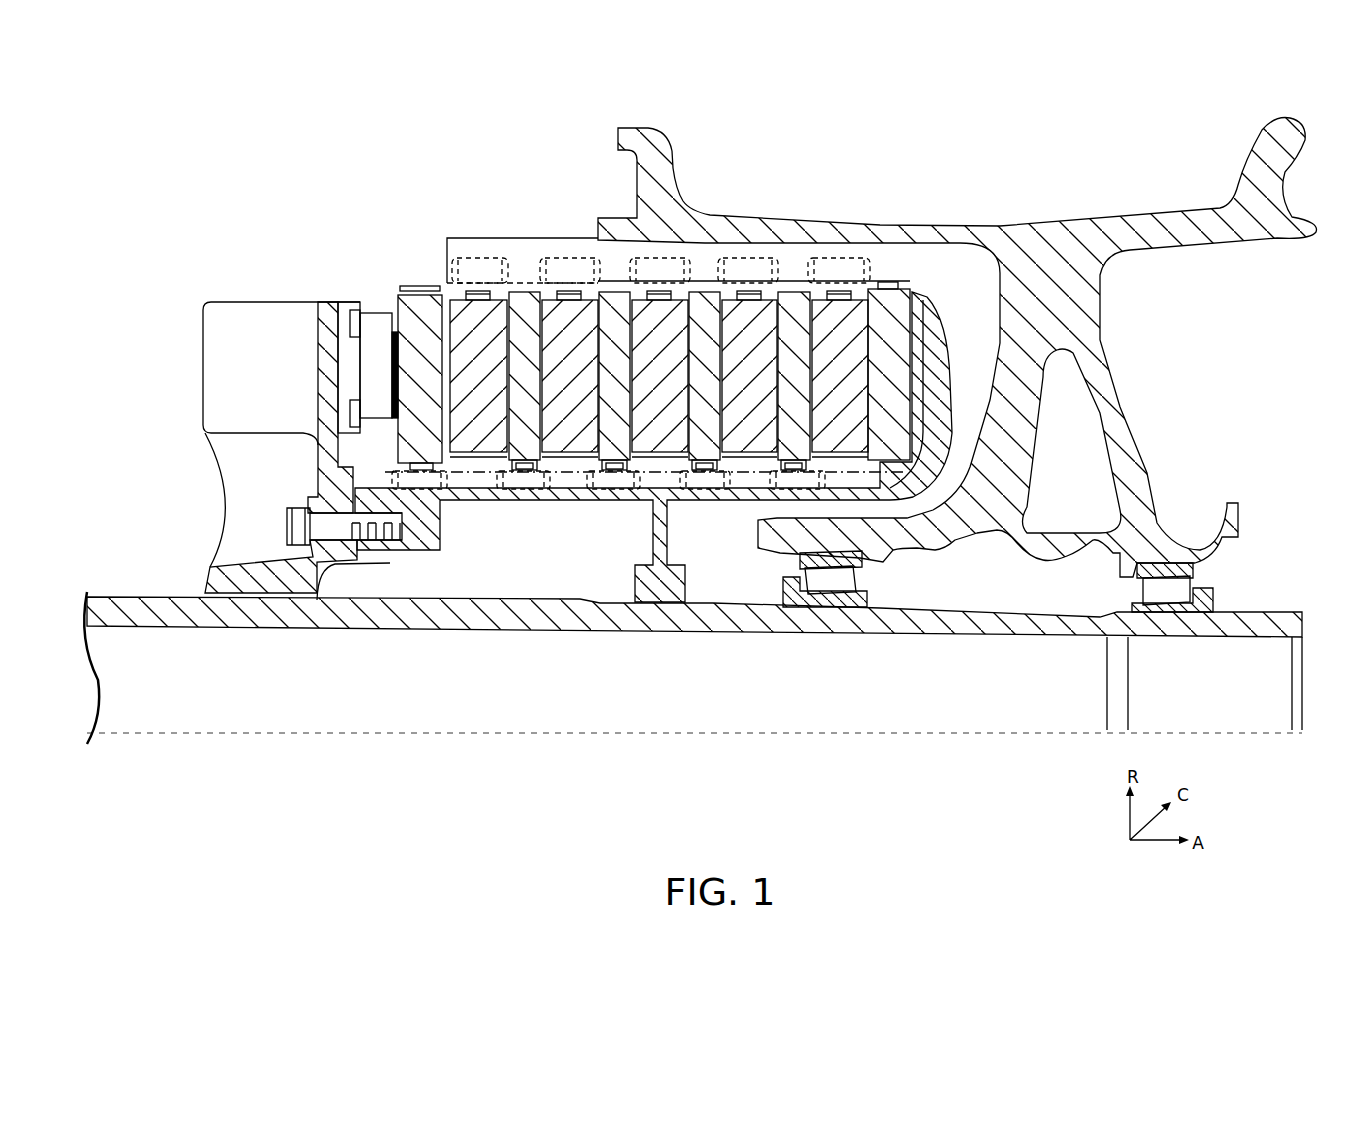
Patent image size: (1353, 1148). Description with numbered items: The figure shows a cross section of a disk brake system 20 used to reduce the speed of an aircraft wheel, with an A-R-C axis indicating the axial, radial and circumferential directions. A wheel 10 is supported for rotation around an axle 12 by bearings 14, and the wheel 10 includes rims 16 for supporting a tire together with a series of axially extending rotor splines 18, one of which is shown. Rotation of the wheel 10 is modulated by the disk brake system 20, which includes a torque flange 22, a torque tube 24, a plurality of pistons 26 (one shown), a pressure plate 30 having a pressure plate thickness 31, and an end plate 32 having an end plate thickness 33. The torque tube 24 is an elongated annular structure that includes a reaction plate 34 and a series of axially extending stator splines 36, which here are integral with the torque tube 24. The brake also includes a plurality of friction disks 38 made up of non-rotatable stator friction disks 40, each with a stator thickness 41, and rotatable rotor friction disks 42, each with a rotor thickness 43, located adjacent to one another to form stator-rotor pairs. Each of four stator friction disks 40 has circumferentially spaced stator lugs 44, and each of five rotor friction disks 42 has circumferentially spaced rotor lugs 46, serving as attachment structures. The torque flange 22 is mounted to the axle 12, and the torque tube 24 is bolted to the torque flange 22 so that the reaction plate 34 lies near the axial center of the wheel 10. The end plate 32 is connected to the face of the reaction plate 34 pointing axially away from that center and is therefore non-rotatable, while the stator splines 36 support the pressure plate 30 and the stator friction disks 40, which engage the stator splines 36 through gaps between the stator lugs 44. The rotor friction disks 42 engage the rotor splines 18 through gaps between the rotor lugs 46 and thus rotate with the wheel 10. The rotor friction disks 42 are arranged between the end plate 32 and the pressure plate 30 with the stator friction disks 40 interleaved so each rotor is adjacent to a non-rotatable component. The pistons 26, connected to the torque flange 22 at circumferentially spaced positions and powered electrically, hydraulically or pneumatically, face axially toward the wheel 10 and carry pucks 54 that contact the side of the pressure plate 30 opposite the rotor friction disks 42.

The wheel 10 is at (1093, 201).
The axle 12 is at (1030, 627).
The bearings 14 is at (852, 579).
The rims 16 is at (660, 150).
The rotor splines 18 is at (570, 240).
The disk brake system 20 is at (313, 236).
The torque flange 22 is at (325, 480).
The torque tube 24 is at (550, 502).
The pistons 26 is at (372, 310).
The pressure plate 30 is at (397, 305).
The pressure plate thickness 31 is at (423, 297).
The end plate 32 is at (905, 300).
The end plate thickness 33 is at (940, 510).
The reaction plate 34 is at (932, 360).
The stator splines 36 is at (580, 490).
The friction disks 38 is at (448, 298).
The stator friction disk 40 is at (850, 258).
The stator thickness 41 is at (525, 292).
The rotor friction disk 42 is at (477, 291).
The rotor thickness 43 is at (478, 468).
The stator lugs 44 is at (777, 490).
The rotor lugs 46 is at (740, 258).
The pucks 54 is at (395, 330).